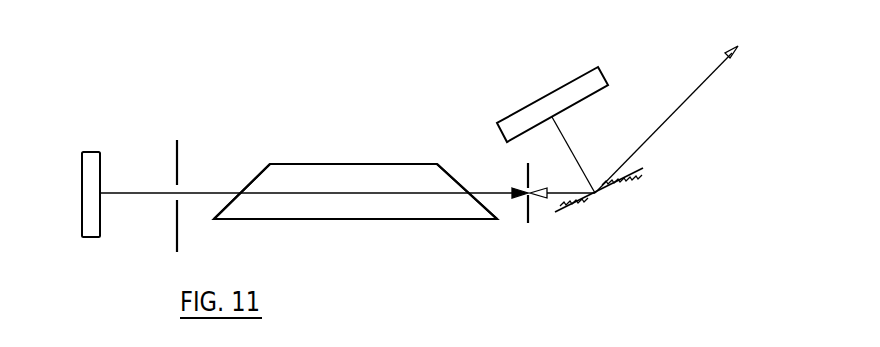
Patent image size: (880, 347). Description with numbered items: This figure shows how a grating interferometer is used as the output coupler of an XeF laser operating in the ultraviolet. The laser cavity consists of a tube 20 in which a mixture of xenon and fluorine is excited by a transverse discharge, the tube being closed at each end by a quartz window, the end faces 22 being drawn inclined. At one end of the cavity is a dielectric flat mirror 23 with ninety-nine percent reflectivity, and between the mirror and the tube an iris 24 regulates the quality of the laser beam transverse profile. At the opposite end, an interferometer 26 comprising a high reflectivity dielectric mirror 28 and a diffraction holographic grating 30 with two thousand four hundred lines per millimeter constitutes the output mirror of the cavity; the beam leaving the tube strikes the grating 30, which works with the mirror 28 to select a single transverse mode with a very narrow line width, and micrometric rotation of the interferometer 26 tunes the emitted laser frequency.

The tube 20 is at (367, 187).
The slanted faces of prism 22 is at (258, 174).
The dielectric flat mirror 23 is at (88, 180).
The iris 24 is at (176, 225).
The interferometer 26 is at (601, 158).
The high reflectivity dielectric mirror 28 is at (523, 115).
The diffraction holographic grating 30 is at (600, 195).